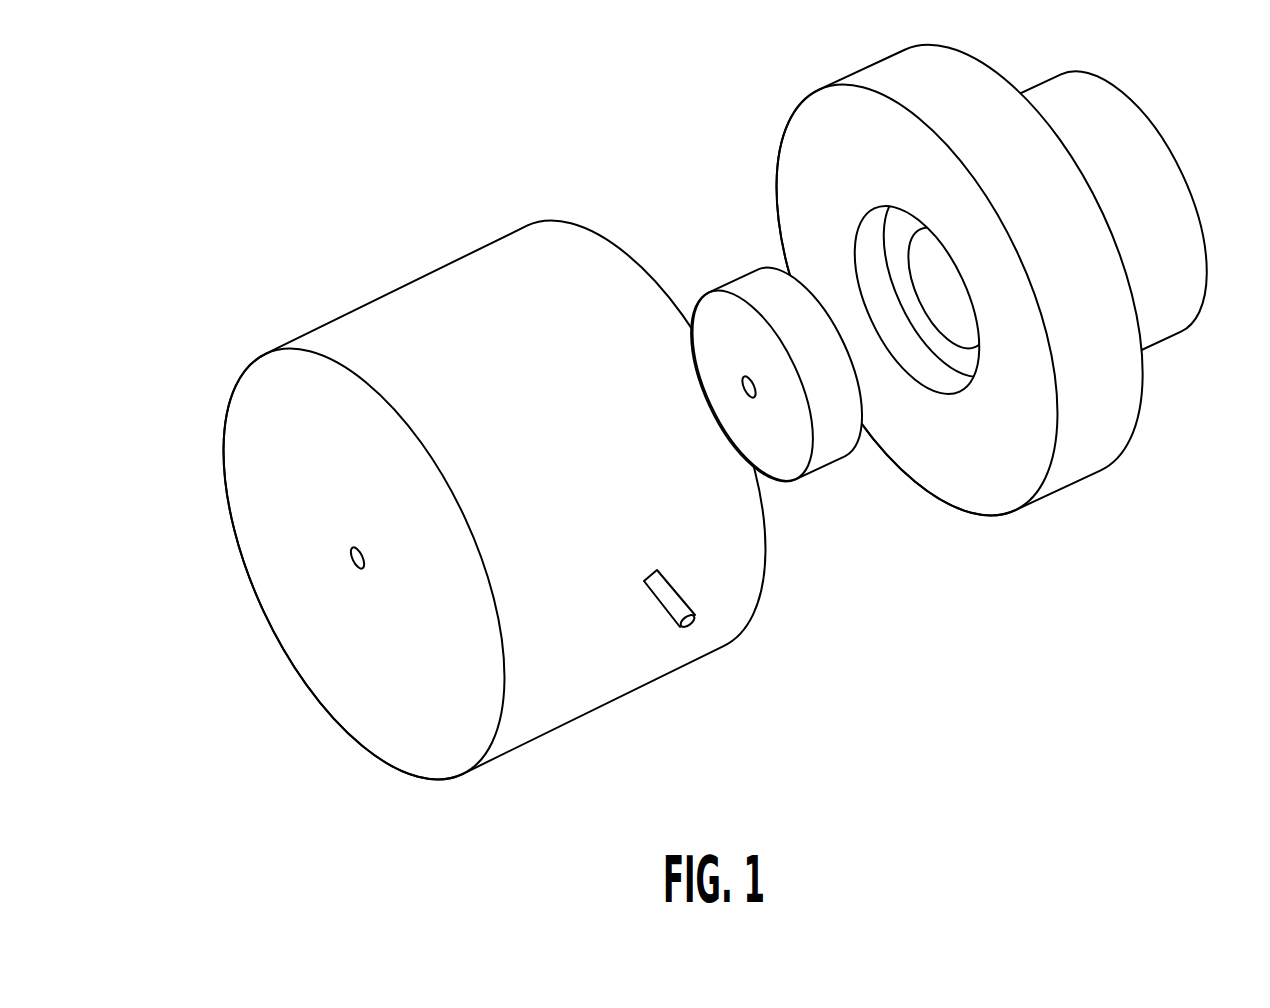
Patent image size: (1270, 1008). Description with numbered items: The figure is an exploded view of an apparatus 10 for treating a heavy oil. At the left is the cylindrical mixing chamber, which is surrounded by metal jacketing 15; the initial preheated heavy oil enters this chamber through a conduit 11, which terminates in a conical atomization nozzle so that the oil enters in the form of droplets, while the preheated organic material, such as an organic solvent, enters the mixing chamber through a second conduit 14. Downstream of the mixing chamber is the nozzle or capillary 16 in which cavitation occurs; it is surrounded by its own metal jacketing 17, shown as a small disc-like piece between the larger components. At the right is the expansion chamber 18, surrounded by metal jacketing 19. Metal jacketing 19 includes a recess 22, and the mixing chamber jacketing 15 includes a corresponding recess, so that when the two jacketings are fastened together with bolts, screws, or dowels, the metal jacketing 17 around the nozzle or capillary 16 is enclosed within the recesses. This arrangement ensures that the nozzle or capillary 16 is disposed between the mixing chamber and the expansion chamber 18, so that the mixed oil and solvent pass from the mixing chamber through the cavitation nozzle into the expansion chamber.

The apparatus 10 is at (377, 122).
The conduit 11 is at (350, 560).
The conduit 14 is at (675, 603).
The metal jacketing 15 is at (463, 264).
The nozzle or capillary 16 is at (747, 376).
The metal jacketing 17 is at (828, 448).
The expansion chamber 18 is at (924, 340).
The metal jacketing 19 is at (1080, 458).
The recess 22 is at (894, 239).